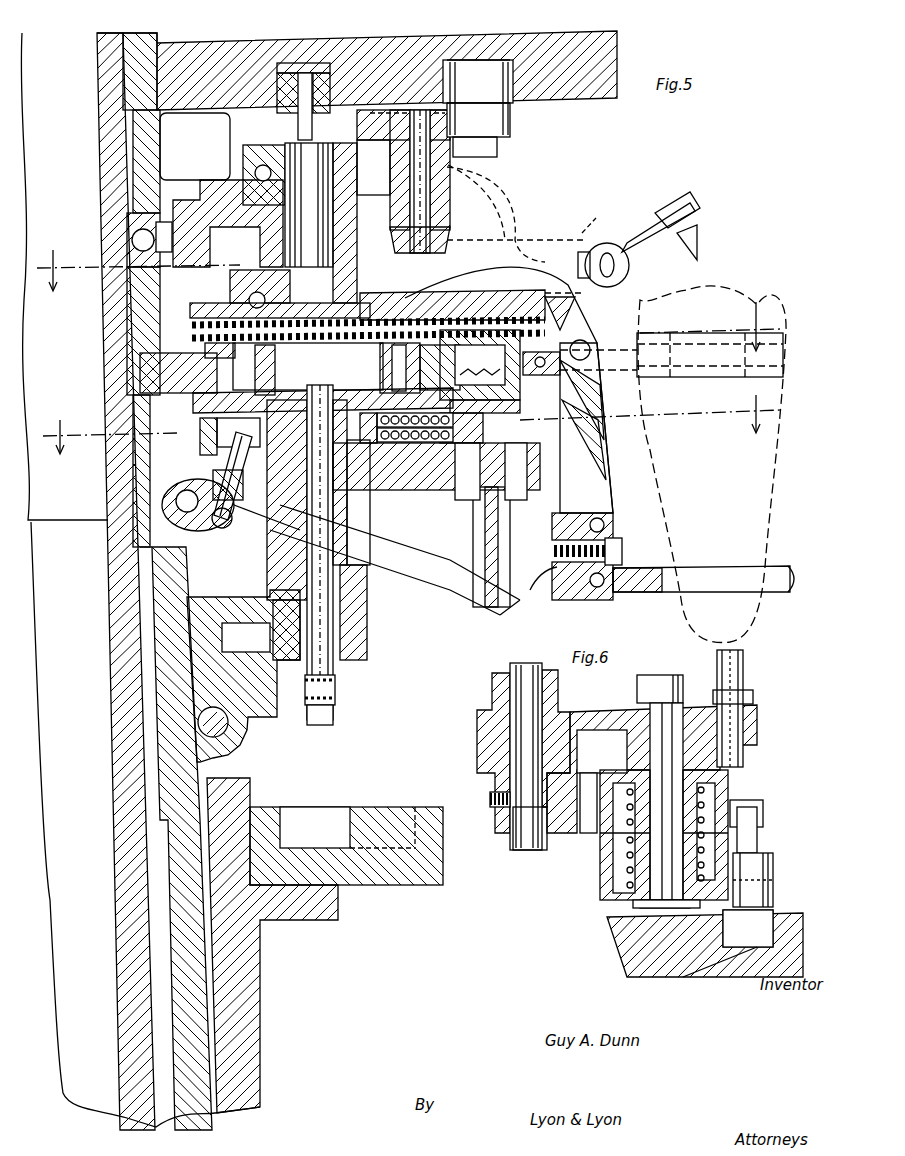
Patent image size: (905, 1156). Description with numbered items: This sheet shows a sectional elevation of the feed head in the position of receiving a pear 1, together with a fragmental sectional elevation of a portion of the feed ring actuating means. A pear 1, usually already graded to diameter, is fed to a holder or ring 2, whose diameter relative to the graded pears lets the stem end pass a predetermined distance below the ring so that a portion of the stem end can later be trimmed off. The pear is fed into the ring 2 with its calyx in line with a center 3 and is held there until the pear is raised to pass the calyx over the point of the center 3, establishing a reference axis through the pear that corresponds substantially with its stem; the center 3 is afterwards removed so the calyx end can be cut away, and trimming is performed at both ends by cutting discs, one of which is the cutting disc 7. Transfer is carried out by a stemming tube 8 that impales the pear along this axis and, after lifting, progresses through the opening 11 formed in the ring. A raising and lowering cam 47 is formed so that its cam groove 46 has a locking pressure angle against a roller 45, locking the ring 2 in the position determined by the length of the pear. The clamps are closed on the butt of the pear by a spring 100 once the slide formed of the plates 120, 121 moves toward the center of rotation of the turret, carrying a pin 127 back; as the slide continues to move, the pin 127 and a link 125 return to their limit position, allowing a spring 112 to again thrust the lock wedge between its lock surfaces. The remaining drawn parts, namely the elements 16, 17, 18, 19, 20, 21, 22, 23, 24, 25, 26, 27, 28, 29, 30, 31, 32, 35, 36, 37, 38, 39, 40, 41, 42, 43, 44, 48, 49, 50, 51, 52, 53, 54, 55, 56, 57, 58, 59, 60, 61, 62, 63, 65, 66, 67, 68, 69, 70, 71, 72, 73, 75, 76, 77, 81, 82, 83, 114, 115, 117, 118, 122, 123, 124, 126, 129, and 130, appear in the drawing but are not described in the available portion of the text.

In FIG. 5, the pear 1 is at (760, 480).
In FIG. 5, the ring 2 is at (650, 586).
In FIG. 5, the center 3 is at (690, 240).
In FIG. 5, the cutting disc 7 is at (408, 298).
In FIG. 5, the stemming tube 8 is at (410, 424).
In FIG. 5, the opening 11 is at (772, 567).
In FIG. 5, the frame wall 16 is at (112, 200).
In FIG. 5, the slot 17 is at (193, 1108).
In FIG. 5, the top frame bar 18 is at (617, 52).
In FIG. 5, the curved support 19 is at (552, 290).
In FIG. 5, the lever 20 is at (514, 547).
In FIG. 6, the lever 20 is at (595, 712).
In FIG. 5, the pin 21 is at (288, 158).
In FIG. 5, the sleeve 22 is at (356, 581).
In FIG. 6, the sleeve 22 is at (480, 685).
In FIG. 5, the bracket 23 is at (252, 200).
In FIG. 5, the shaft 24 is at (368, 607).
In FIG. 5, the block 25 is at (190, 195).
In FIG. 5, the cavity 26 is at (246, 625).
In FIG. 6, the screw 27 is at (745, 665).
In FIG. 5, the cavity 28 is at (195, 146).
In FIG. 5, the ball 29 is at (138, 243).
In FIG. 5, the block 30 is at (138, 283).
In FIG. 5, the plate 31 is at (112, 383).
In FIG. 5, the wall 32 is at (138, 490).
In FIG. 5, the block 35 is at (572, 592).
In FIG. 5, the screw 36 is at (622, 551).
In FIG. 5, the wedge 37 is at (608, 497).
In FIG. 5, the lever arm 38 is at (470, 580).
In FIG. 5, the clamp piece 39 is at (573, 312).
In FIG. 5, the pin 40 is at (224, 527).
In FIG. 5, the block 41 is at (262, 520).
In FIG. 5, the link 42 is at (207, 520).
In FIG. 5, the lobe 43 is at (183, 510).
In FIG. 5, the pin 44 is at (230, 490).
In FIG. 5, the roller 45 is at (232, 443).
In FIG. 5, the cam groove 46 is at (217, 430).
In FIG. 5, the raising and lowering cam 47 is at (290, 405).
In FIG. 5, the bolt 48 is at (345, 541).
In FIG. 6, the bolt 48 is at (517, 672).
In FIG. 5, the bracket 49 is at (252, 296).
In FIG. 5, the nut 50 is at (284, 690).
In FIG. 6, the nut 50 is at (572, 808).
In FIG. 6, the rod 51 is at (594, 805).
In FIG. 6, the spring housing 52 is at (728, 785).
In FIG. 6, the bolt 53 is at (680, 705).
In FIG. 6, the spring housing 54 is at (606, 884).
In FIG. 6, the spring 55 is at (712, 796).
In FIG. 6, the plate 56 is at (633, 903).
In FIG. 6, the collar 57 is at (770, 882).
In FIG. 6, the plunger 58 is at (752, 870).
In FIG. 6, the foot 59 is at (760, 928).
In FIG. 5, the recess 60 is at (338, 815).
In FIG. 6, the recess 60 is at (708, 973).
In FIG. 5, the base block 61 is at (412, 870).
In FIG. 6, the base block 61 is at (630, 948).
In FIG. 5, the block 62 is at (252, 972).
In FIG. 6, the bracket 63 is at (760, 815).
In FIG. 5, the rod 65 is at (655, 245).
In FIG. 5, the collar 66 is at (614, 270).
In FIG. 5, the axis line 67 is at (596, 217).
In FIG. 5, the dashed outline 68 is at (510, 207).
In FIG. 5, the dashed outline 69 is at (450, 183).
In FIG. 5, the bore 70 is at (427, 200).
In FIG. 5, the cone 71 is at (448, 240).
In FIG. 5, the plate 72 is at (394, 135).
In FIG. 5, the block 73 is at (370, 135).
In FIG. 5, the nut 75 is at (320, 104).
In FIG. 5, the bolt 76 is at (290, 100).
In FIG. 5, the channel 77 is at (356, 178).
In FIG. 5, the cylinder 81 is at (506, 133).
In FIG. 5, the flange 82 is at (508, 92).
In FIG. 5, the flange 83 is at (508, 78).
In FIG. 5, the spring 100 is at (590, 342).
In FIG. 5, the spring 112 is at (418, 460).
In FIG. 5, the block 114 is at (372, 455).
In FIG. 5, the spring 115 is at (392, 452).
In FIG. 5, the block 117 is at (518, 425).
In FIG. 5, the block 118 is at (518, 407).
In FIG. 5, the plate 120 is at (556, 372).
In FIG. 5, the plate 121 is at (206, 348).
In FIG. 5, the housing 122 is at (308, 366).
In FIG. 5, the pin 123 is at (270, 362).
In FIG. 5, the block 124 is at (480, 365).
In FIG. 5, the link 125 is at (393, 353).
In FIG. 5, the spring 126 is at (483, 373).
In FIG. 5, the pin 127 is at (396, 380).
In FIG. 5, the plate 129 is at (470, 300).
In FIG. 5, the plate 130 is at (205, 310).